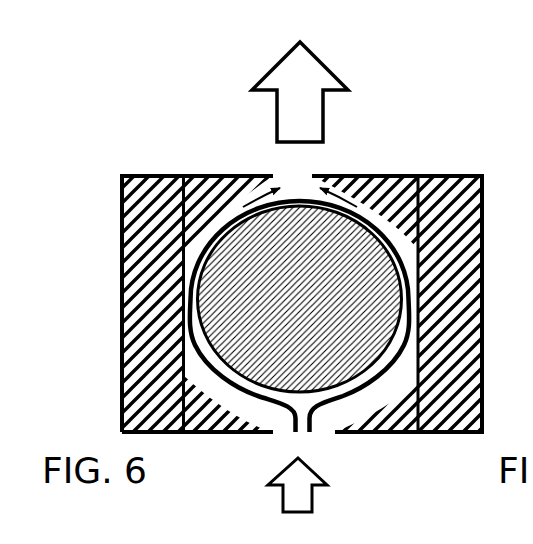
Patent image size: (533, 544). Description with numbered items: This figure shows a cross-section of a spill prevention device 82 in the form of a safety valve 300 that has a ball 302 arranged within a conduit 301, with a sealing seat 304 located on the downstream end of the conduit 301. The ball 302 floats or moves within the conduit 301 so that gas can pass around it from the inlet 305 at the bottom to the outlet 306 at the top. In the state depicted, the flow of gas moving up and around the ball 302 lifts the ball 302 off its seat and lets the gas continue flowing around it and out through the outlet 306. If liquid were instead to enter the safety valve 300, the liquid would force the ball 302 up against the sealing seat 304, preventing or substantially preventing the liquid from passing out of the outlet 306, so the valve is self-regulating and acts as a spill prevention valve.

The safety valve 300 is at (192, 158).
The spill prevention device 82 is at (125, 177).
The conduit 301 is at (397, 384).
The ball 302 is at (357, 213).
The sealing seat 304 is at (232, 177).
The inlet 305 is at (312, 435).
The outlet 306 is at (320, 178).